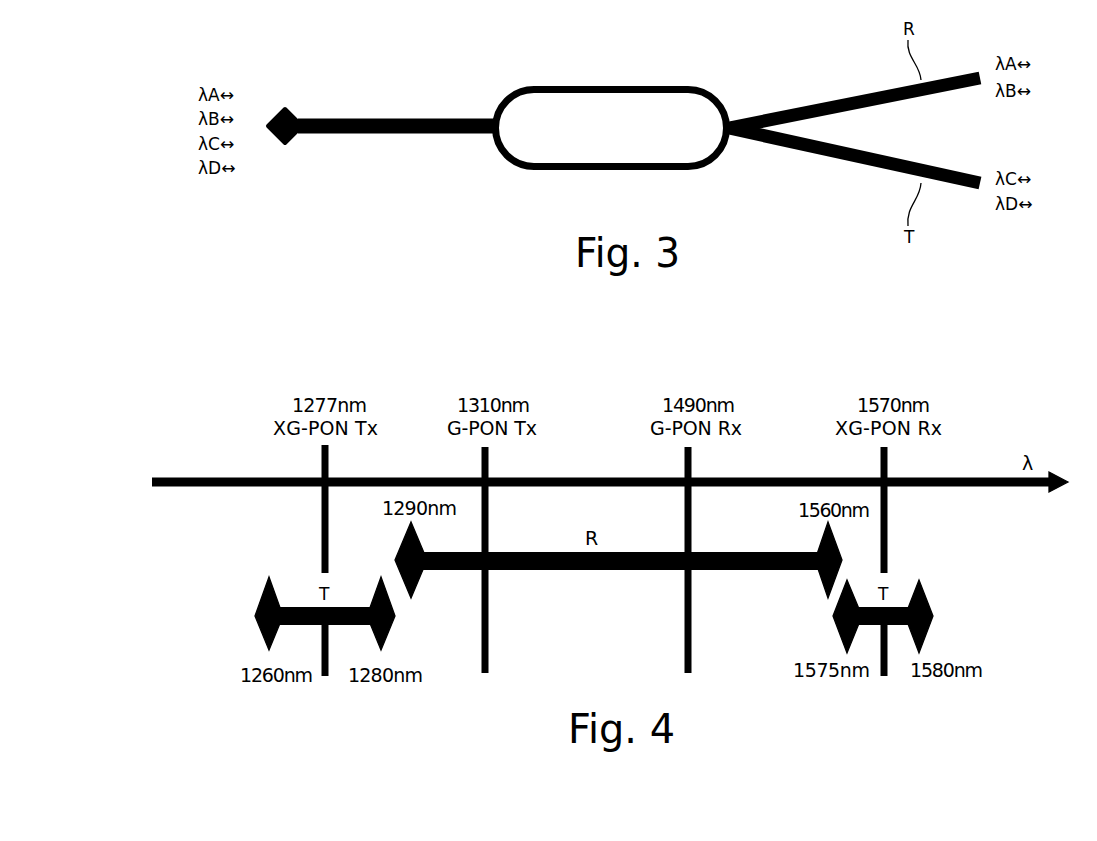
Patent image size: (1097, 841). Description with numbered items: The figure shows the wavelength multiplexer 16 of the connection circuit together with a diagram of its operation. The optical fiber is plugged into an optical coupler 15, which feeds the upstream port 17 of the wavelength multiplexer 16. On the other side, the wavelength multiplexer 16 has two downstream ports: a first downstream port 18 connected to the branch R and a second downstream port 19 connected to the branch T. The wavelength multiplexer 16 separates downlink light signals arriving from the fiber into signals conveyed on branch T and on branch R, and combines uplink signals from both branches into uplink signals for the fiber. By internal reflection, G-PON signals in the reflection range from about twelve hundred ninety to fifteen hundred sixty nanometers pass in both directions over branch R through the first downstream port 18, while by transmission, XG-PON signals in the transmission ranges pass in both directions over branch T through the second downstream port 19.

The optical coupler 15 is at (296, 107).
The wavelength multiplexer 16 is at (522, 187).
The upstream port 17 is at (492, 112).
The first downstream port 18 is at (822, 102).
The second downstream port 19 is at (820, 151).